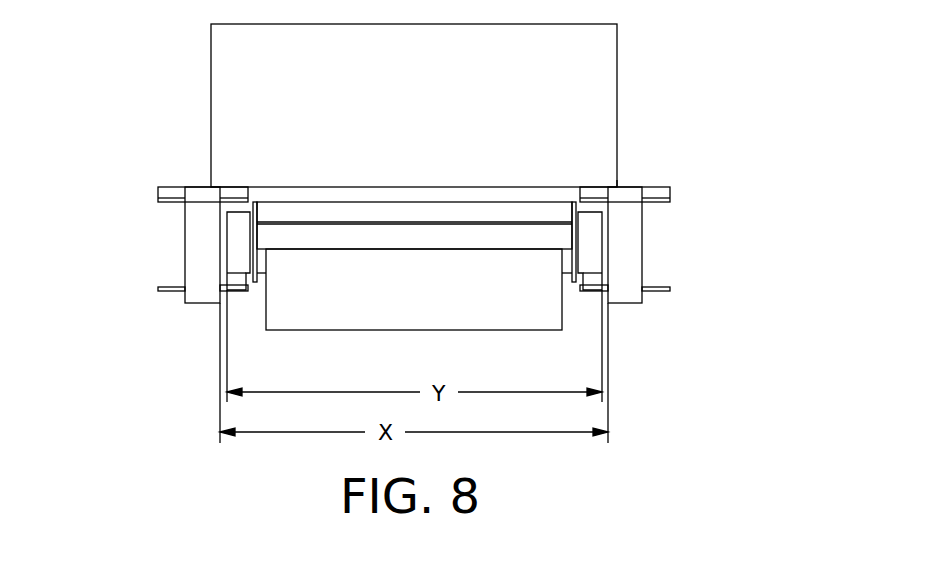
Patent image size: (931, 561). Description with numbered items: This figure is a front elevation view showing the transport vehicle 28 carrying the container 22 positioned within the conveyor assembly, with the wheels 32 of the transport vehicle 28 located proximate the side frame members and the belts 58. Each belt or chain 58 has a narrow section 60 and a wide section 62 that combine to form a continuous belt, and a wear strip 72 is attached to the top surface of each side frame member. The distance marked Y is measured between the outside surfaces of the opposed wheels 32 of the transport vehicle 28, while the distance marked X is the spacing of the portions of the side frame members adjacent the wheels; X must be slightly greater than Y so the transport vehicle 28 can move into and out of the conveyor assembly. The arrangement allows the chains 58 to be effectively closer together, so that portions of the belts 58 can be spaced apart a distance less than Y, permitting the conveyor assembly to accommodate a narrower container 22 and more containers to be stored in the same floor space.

The container 22 is at (433, 107).
The transport vehicle 28 is at (435, 299).
The wheels 32 is at (240, 240).
The belt 58 is at (627, 187).
The narrow section 60 is at (625, 227).
The wide section 62 is at (660, 187).
The wear strip 72 is at (240, 195).